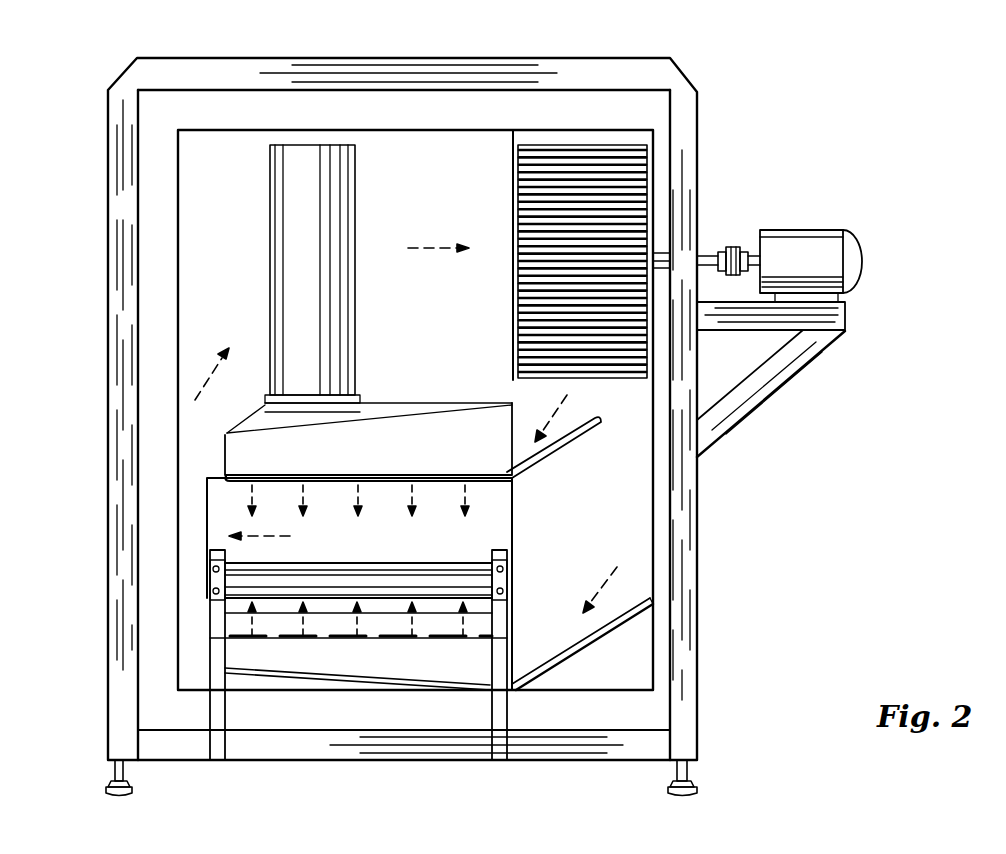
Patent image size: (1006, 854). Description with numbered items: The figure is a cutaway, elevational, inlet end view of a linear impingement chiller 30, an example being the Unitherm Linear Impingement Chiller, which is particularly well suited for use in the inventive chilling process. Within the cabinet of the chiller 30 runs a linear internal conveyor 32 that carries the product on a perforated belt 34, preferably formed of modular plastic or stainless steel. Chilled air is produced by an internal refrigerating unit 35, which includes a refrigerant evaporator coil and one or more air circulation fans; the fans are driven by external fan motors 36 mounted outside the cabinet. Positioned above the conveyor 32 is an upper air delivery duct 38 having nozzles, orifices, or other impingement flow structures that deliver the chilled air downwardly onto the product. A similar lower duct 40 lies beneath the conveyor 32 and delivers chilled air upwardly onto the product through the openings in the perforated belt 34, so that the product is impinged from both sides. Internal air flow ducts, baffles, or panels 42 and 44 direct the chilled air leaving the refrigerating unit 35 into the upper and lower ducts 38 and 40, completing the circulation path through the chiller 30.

The linear impingement chiller 30 is at (708, 98).
The linear internal conveyor 32 is at (210, 563).
The perforated belt 34 is at (438, 560).
The internal refrigerating unit 35 is at (577, 233).
The external fan motors 36 is at (830, 248).
The upper air delivery duct 38 is at (247, 454).
The lower duct 40 is at (250, 655).
The internal air flow duct, baffle, or panel 42 is at (557, 450).
The internal air flow duct, baffle, or panel 44 is at (600, 640).